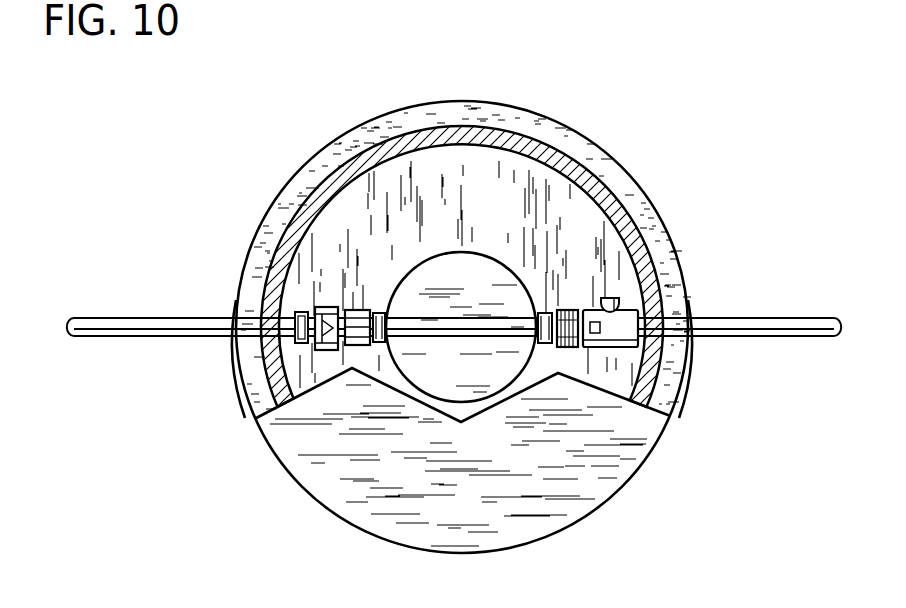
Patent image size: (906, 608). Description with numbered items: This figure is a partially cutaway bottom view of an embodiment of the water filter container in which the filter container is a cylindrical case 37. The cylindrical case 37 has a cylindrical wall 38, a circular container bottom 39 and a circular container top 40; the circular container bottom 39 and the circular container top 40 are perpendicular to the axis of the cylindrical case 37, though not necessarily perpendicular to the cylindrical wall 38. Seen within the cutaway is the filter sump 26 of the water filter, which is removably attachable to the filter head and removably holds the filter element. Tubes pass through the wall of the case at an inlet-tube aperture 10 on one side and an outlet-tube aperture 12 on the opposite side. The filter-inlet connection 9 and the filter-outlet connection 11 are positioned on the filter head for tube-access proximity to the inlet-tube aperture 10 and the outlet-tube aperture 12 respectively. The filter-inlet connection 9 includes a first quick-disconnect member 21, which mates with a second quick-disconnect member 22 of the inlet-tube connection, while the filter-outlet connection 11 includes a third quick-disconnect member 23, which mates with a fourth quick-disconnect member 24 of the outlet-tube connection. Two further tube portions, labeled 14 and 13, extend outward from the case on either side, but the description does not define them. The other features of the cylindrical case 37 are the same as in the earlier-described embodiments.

The cylindrical case 37 is at (222, 126).
The cylindrical wall 38 is at (393, 143).
The circular container top 40 is at (513, 197).
The circular container bottom 39 is at (340, 463).
The filter sump 26 is at (460, 327).
The outlet-tube aperture 12 is at (240, 370).
The inlet-tube aperture 10 is at (665, 340).
The inlet pipe 14 is at (215, 327).
The outlet pipe 13 is at (713, 325).
The filter-outlet connection 11 is at (372, 315).
The third quick-disconnect member 23 is at (320, 307).
The fourth quick-disconnect member 24 is at (347, 313).
The filter-inlet connection 9 is at (551, 313).
The first quick-disconnect member 21 is at (571, 309).
The second quick-disconnect member 22 is at (615, 318).